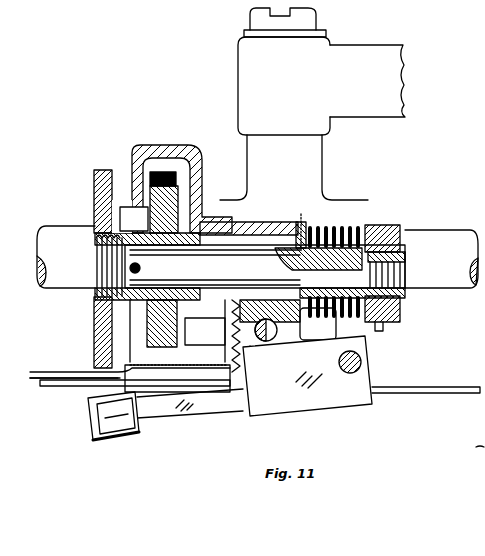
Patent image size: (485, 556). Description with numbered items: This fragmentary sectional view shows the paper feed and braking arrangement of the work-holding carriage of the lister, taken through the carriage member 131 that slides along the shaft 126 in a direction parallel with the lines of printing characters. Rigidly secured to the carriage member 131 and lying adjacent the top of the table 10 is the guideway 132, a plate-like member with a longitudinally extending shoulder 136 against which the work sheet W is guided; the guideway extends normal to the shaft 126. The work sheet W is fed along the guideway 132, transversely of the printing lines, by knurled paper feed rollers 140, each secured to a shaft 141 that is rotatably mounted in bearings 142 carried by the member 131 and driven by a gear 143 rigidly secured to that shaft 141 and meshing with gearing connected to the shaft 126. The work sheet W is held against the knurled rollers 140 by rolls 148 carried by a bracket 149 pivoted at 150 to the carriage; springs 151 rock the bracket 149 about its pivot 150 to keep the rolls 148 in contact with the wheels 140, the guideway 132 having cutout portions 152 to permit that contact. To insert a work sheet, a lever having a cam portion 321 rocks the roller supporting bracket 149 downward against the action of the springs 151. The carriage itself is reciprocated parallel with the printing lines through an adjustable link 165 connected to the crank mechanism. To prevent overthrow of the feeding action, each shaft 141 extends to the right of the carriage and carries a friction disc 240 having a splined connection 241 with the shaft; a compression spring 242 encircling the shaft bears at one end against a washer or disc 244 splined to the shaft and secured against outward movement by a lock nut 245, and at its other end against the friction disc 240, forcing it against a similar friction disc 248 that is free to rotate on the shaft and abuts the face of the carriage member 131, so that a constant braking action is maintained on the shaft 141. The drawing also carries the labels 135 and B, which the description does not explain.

The table 10 is at (452, 386).
The direction B is at (479, 432).
The work sheet W is at (45, 371).
The shaft 126 is at (455, 285).
The carriage member 131 is at (268, 150).
The guideway 132 is at (65, 382).
The arm 135 is at (188, 412).
The shoulder 136 is at (182, 346).
The paper feed roller 140 is at (93, 183).
The shaft 141 is at (250, 266).
The bearing 142 is at (252, 229).
The gear 143 is at (165, 172).
The roll 148 is at (112, 442).
The bracket 149 is at (366, 404).
The pivot 150 is at (362, 362).
The spring 151 is at (250, 400).
The cutout portion 152 is at (80, 388).
The adjustable link 165 is at (367, 81).
The friction disc 240 is at (311, 224).
The splined connection 241 is at (330, 226).
The compression spring 242 is at (347, 226).
The washer 244 is at (373, 224).
The lock nut 245 is at (400, 240).
The friction disc 248 is at (301, 222).
The cam portion 321 is at (278, 342).